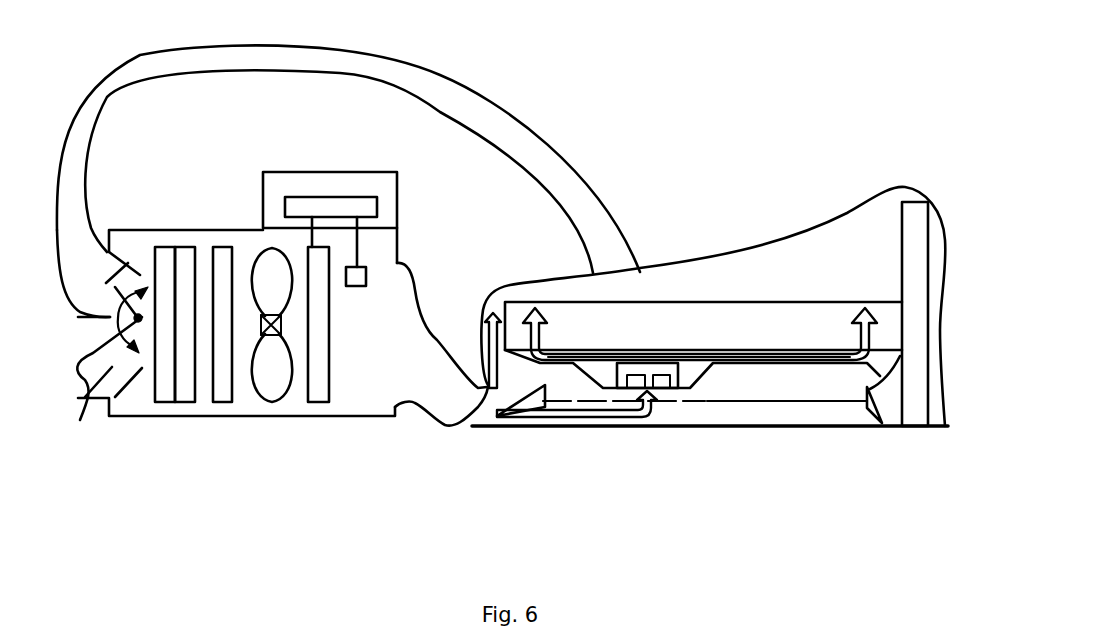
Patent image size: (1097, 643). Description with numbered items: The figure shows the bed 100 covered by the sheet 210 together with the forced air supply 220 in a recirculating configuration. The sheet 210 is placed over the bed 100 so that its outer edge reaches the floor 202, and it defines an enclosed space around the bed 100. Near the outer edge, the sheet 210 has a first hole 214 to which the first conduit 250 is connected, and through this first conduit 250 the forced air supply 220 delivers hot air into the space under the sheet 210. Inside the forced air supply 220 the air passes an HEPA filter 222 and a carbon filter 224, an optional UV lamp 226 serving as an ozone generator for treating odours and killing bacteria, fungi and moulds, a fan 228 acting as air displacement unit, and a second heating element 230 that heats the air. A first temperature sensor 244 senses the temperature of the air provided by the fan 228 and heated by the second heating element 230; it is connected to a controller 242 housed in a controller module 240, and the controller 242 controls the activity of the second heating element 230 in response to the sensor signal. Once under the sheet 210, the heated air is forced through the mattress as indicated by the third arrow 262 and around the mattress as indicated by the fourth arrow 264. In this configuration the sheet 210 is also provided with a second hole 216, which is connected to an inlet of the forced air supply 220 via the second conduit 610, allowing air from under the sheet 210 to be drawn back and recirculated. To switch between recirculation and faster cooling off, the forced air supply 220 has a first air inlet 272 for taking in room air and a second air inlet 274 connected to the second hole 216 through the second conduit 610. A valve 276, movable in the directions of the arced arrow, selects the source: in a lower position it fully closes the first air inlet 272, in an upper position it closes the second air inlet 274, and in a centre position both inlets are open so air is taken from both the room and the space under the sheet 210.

The bed 100 is at (819, 262).
The floor 202 is at (790, 427).
The sheet 210 is at (737, 262).
The first hole 214 is at (522, 413).
The second hole 216 is at (622, 272).
The forced air supply 220 is at (200, 228).
The HEPA filter 222 is at (160, 403).
The carbon filter 224 is at (183, 403).
The UV lamp 226 is at (220, 403).
The fan 228 is at (270, 403).
The second heating element 230 is at (312, 403).
The controller module 240 is at (305, 172).
The controller 242 is at (373, 197).
The first temperature sensor 244 is at (358, 287).
The first conduit 250 is at (437, 340).
The third arrow 262 is at (605, 420).
The fourth arrow 264 is at (484, 385).
The first air inlet 272 is at (88, 413).
The second air inlet 274 is at (109, 252).
The valve 276 is at (80, 420).
The second conduit 610 is at (537, 147).